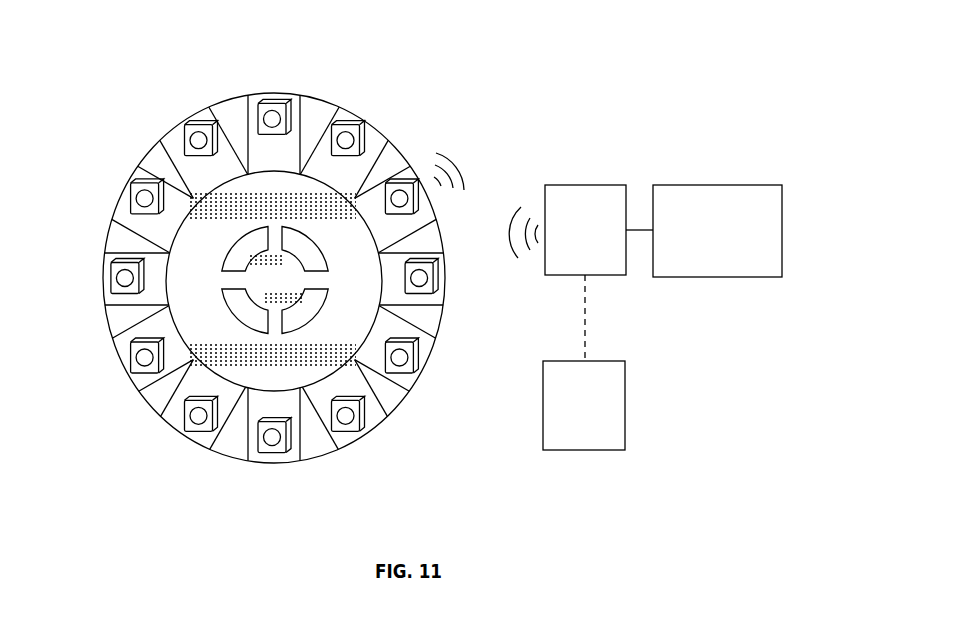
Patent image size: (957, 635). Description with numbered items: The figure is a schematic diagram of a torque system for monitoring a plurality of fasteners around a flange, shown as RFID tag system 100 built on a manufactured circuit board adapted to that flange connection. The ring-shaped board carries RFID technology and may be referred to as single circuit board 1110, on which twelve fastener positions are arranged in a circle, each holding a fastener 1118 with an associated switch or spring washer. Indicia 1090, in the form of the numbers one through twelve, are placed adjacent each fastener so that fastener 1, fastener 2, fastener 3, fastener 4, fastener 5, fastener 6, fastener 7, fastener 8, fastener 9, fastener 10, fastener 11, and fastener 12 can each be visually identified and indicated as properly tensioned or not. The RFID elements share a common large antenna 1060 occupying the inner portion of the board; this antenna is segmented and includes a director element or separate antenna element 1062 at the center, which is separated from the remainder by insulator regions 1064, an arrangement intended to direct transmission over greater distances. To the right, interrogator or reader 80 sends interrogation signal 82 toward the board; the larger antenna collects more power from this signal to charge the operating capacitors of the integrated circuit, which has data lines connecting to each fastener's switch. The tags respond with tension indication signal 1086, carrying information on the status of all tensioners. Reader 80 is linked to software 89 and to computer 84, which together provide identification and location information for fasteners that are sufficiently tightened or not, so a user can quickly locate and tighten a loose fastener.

The RFID tag system 100 is at (148, 50).
The antenna 1060 is at (178, 294).
The director element or separate antenna element 1062 is at (240, 269).
The insulator regions 1064 is at (139, 398).
The single circuit board with RFID technology 1110 is at (263, 100).
The fastener 1118 is at (277, 107).
The indicia 1090 is at (352, 378).
The tension indication signal 1086 is at (453, 158).
The interrogation signal 82 is at (512, 252).
The interrogator or reader 80 is at (603, 276).
The software 89 is at (740, 185).
The computer 84 is at (624, 407).
The fastener 1 is at (204, 152).
The fastener 2 is at (274, 134).
The fastener 3 is at (344, 152).
The fastener 4 is at (396, 209).
The fastener 5 is at (410, 279).
The fastener 6 is at (395, 349).
The fastener 7 is at (344, 405).
The fastener 8 is at (274, 424).
The fastener 9 is at (203, 405).
The fastener 10 is at (152, 349).
The fastener 11 is at (137, 279).
The fastener 12 is at (153, 209).